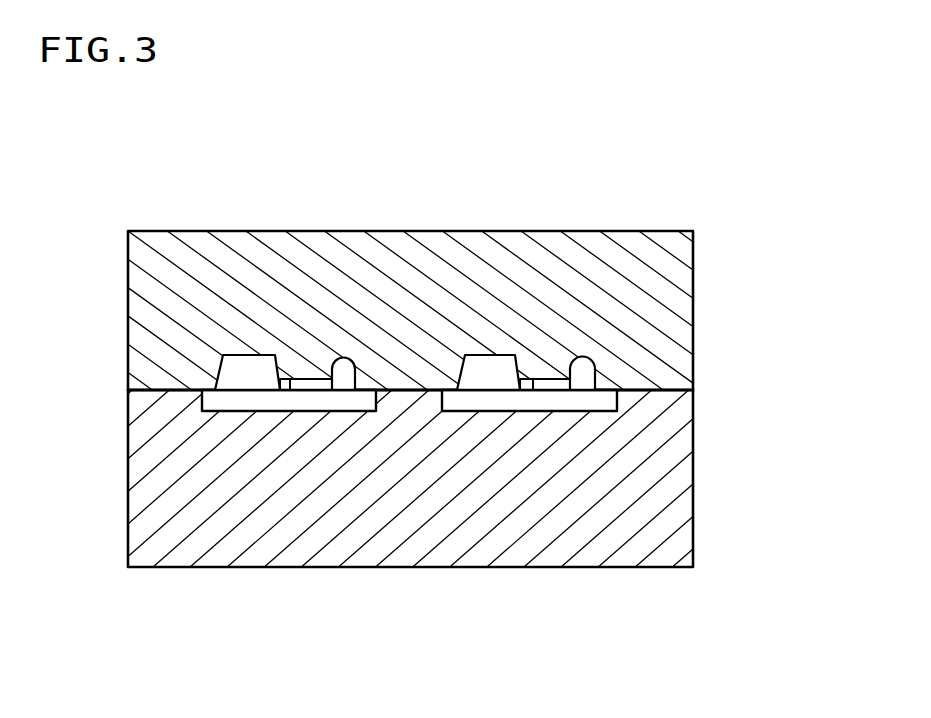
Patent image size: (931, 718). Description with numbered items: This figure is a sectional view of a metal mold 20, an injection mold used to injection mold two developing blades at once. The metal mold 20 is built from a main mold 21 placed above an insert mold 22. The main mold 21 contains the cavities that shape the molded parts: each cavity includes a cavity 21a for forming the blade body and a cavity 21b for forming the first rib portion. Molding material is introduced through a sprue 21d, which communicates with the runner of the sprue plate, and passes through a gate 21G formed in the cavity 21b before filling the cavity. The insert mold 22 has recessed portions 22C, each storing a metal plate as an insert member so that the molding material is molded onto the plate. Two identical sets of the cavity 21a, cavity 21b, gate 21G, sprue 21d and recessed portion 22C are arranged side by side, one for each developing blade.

The metal mold 20 is at (627, 210).
The main mold 21 is at (660, 293).
The cavity 21a is at (235, 385).
The cavity 21b is at (287, 377).
The gate 21G is at (310, 383).
The sprue 21d is at (347, 367).
The insert mold 22 is at (663, 497).
The recessed portion 22C is at (287, 400).